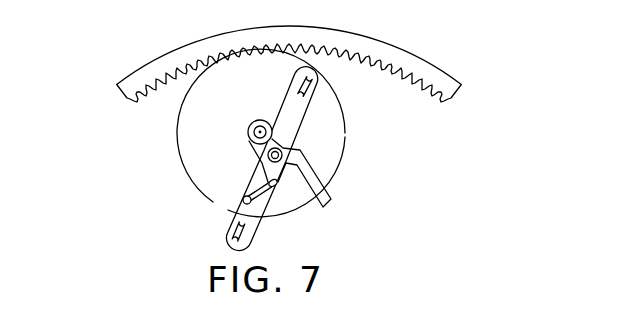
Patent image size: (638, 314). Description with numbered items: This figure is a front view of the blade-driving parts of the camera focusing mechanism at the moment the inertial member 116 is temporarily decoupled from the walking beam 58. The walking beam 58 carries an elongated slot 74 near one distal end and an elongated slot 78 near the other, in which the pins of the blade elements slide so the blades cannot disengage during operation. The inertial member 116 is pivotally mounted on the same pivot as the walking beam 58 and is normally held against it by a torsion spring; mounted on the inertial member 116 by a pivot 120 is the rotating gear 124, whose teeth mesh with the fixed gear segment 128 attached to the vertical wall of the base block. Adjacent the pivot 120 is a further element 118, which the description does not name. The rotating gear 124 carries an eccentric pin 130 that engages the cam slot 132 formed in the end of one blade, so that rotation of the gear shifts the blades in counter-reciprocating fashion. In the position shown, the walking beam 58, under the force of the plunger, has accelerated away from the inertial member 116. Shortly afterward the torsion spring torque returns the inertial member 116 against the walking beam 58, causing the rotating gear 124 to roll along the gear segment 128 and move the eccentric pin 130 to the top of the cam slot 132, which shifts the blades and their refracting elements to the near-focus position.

The gear segment 128 is at (322, 28).
The rotating gear 124 is at (345, 133).
The walking beam 58 is at (305, 108).
The elongated slot 74 is at (321, 78).
The elongated slot 78 is at (230, 232).
The pawl 118 is at (268, 157).
The pivot 120 is at (248, 133).
The inertial member 116 is at (268, 155).
The eccentric pin 130 is at (249, 204).
The cam slot 132 is at (274, 185).